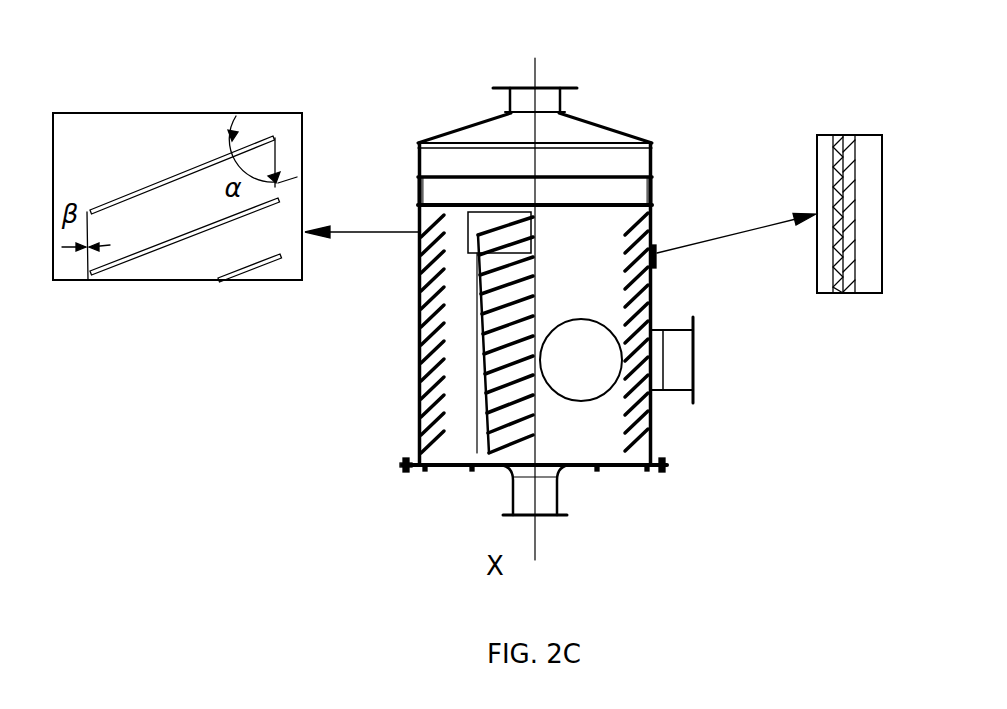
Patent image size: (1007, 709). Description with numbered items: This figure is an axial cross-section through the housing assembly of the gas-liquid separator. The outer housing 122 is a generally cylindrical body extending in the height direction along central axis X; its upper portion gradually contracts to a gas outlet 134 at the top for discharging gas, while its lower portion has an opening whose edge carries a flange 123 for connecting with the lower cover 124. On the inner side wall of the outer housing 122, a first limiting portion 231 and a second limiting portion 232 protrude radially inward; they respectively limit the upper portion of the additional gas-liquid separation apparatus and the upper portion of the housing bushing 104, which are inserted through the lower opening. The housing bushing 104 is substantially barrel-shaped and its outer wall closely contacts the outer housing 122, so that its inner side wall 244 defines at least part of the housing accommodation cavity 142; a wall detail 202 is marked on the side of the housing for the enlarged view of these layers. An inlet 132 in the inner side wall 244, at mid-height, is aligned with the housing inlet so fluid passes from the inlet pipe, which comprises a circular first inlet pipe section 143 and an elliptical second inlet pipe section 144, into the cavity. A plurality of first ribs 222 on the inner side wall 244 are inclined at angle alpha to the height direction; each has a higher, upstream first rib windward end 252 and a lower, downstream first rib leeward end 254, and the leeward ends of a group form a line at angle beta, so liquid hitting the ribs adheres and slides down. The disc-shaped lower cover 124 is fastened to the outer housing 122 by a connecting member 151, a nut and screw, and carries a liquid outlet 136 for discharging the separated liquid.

The gas outlet 134 is at (545, 95).
The housing accommodation cavity 142 is at (426, 161).
The first limiting portion 231 is at (654, 172).
The housing wall 202 is at (653, 200).
The second limiting portion 232 is at (416, 202).
The inlet 132 is at (592, 318).
The first inlet pipe section 143 is at (682, 362).
The second inlet pipe section 144 is at (655, 392).
The lower cover 124 is at (630, 467).
The flange 123 is at (403, 463).
The connecting member 151 is at (403, 472).
The liquid outlet 136 is at (543, 520).
The first ribs 222 is at (173, 178).
The first rib windward end 252 is at (273, 188).
The first rib leeward end 254 is at (90, 210).
The housing bushing 104 is at (830, 150).
The outer housing 122 is at (850, 167).
The inner side wall 244 is at (832, 267).